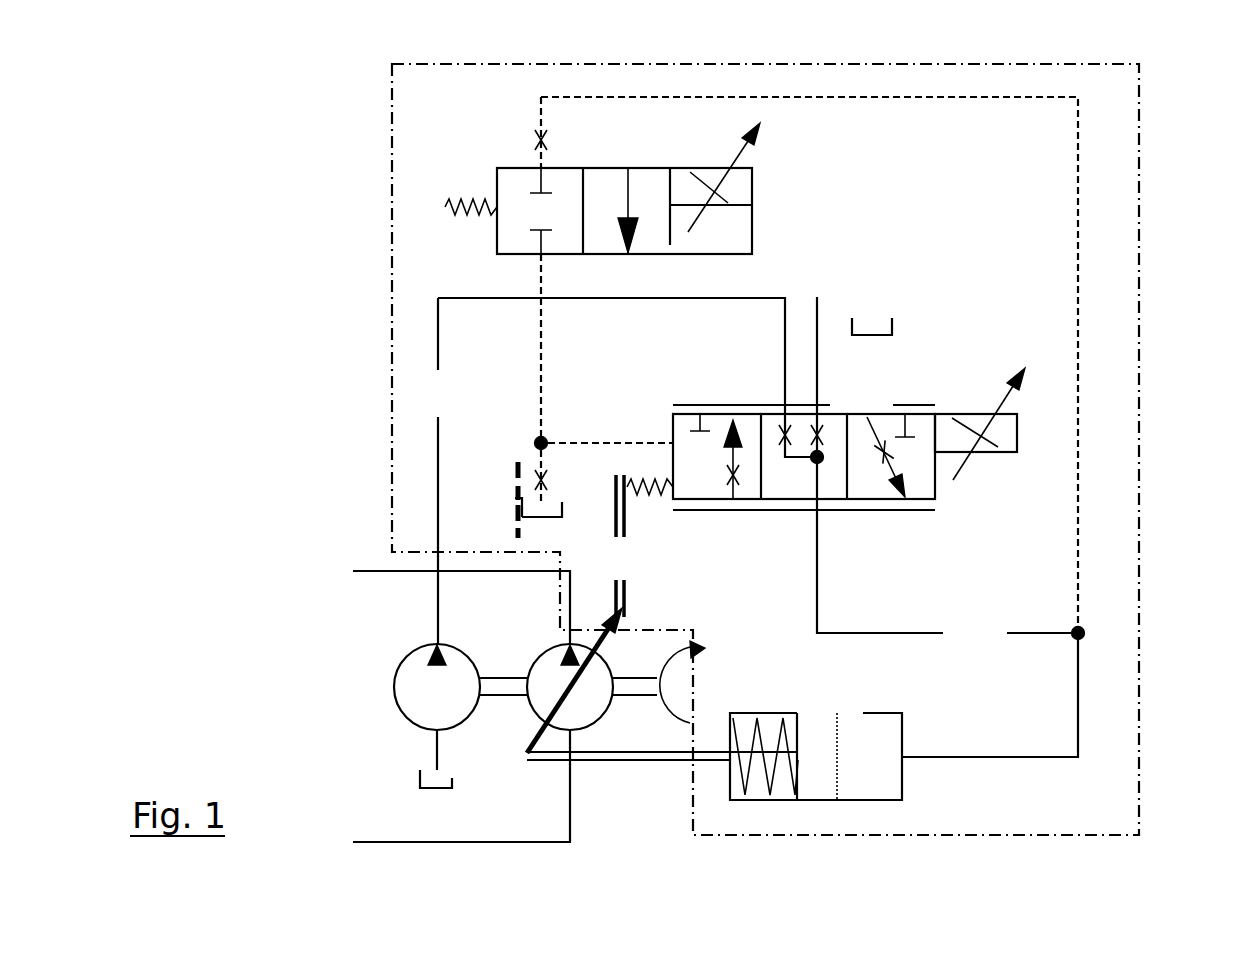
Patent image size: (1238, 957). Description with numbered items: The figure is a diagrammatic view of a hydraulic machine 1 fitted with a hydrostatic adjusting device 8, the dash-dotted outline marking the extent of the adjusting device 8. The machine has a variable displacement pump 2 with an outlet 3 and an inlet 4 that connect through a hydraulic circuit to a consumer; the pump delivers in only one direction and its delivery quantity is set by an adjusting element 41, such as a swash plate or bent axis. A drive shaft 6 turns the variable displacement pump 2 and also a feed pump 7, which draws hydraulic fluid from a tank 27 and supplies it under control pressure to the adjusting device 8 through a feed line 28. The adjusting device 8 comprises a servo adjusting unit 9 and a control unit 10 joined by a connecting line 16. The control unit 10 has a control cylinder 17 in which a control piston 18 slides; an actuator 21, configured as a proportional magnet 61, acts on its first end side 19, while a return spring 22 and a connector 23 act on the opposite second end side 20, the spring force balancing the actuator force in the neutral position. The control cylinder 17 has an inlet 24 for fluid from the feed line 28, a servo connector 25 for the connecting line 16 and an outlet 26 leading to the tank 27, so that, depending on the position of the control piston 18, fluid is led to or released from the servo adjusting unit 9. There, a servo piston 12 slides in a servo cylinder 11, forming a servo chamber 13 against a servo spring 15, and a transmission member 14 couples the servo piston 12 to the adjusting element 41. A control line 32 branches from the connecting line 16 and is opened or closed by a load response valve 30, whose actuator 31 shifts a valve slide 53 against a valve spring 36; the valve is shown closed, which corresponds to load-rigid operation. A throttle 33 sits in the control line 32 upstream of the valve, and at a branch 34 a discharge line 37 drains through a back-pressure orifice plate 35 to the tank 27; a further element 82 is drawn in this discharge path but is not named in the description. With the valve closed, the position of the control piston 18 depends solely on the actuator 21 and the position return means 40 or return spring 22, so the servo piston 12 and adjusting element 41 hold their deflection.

The hydraulic machine 1 is at (228, 319).
The variable displacement pump 2 is at (525, 720).
The outlet 3 is at (548, 665).
The inlet 4 is at (548, 755).
The drive shaft 6 is at (633, 713).
The feed pump 7 is at (384, 707).
The hydrostatic adjusting device 8 is at (1142, 298).
The servo adjusting unit 9 is at (840, 702).
The control unit 10 is at (829, 463).
The servo cylinder 11 is at (897, 757).
The servo piston 12 is at (800, 767).
The servo chamber 13 is at (863, 755).
The transmission member 14 is at (623, 783).
The servo spring 15 is at (733, 742).
The connecting line 16 is at (807, 593).
The control cylinder 17 is at (920, 415).
The control piston 18 is at (783, 493).
The first end side 19 is at (928, 463).
The second end side 20 is at (660, 440).
The actuator 21 is at (993, 447).
The return spring 22 is at (650, 502).
The connector 23 is at (653, 455).
The inlet 24 is at (775, 418).
The servo connector 25 is at (794, 441).
The outlet 26 is at (807, 417).
The tank 27 is at (508, 523).
The feed line 28 is at (545, 308).
The load response valve 30 is at (466, 155).
The actuator 31 is at (722, 187).
The control line 32 is at (1077, 200).
The throttle 33 is at (525, 140).
The branch 34 is at (517, 455).
The back-pressure orifice plate 35 is at (515, 493).
The valve spring 36 is at (427, 213).
The discharge line 37 is at (515, 473).
The position return means 40 is at (602, 600).
The adjusting element 41 is at (455, 659).
The valve slide 53 is at (637, 238).
The proportional magnet 61 is at (998, 447).
The throttle 82 is at (568, 453).